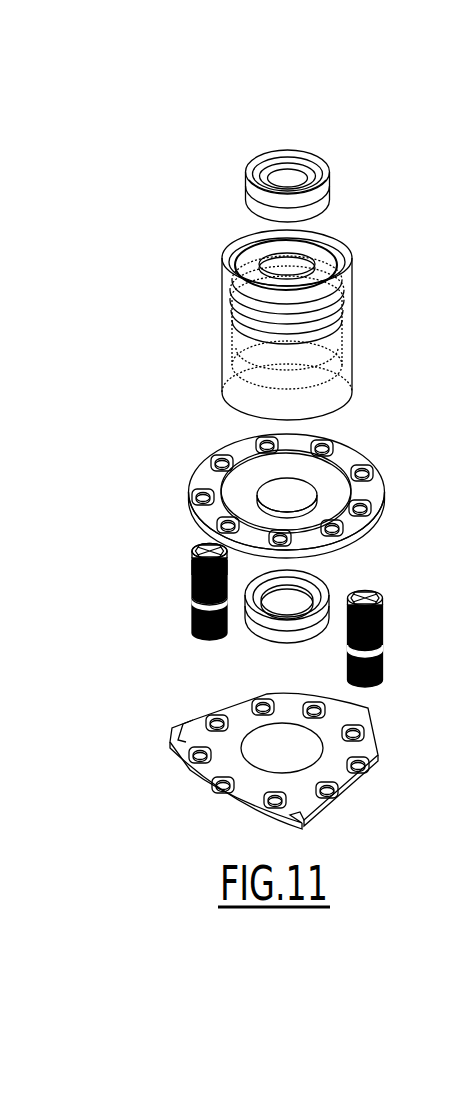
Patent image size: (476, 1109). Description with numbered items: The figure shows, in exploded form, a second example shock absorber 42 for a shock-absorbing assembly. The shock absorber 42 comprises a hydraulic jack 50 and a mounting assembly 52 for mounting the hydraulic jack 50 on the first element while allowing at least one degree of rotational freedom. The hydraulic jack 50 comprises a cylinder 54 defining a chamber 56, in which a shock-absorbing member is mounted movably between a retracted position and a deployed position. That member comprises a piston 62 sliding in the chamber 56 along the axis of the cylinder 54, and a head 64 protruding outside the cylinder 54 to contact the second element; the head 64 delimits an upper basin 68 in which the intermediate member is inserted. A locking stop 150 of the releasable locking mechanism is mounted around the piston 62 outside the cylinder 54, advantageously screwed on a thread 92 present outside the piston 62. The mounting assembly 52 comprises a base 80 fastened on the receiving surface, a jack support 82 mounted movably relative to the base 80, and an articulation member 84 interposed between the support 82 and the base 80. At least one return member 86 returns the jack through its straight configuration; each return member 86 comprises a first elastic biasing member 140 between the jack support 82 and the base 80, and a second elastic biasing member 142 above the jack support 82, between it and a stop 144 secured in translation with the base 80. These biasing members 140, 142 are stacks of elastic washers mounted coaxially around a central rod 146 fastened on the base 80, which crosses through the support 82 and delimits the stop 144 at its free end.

The shock absorber 42 is at (320, 163).
The hydraulic jack 50 is at (305, 322).
The mounting assembly 52 is at (280, 761).
The cylinder 54 is at (343, 355).
The chamber 56 is at (243, 347).
The piston 62 is at (247, 255).
The head 64 is at (305, 171).
The upper basin 68 is at (322, 205).
The base 80 is at (190, 770).
The jack support 82 is at (193, 482).
The articulation member 84 is at (262, 640).
The return member 86 is at (157, 588).
The threads 92 is at (330, 298).
The first elastic biasing member 140 is at (193, 620).
The second elastic biasing member 142 is at (195, 577).
The stop 144 is at (208, 545).
The central rod 146 is at (195, 603).
The locking stop 150 is at (353, 258).